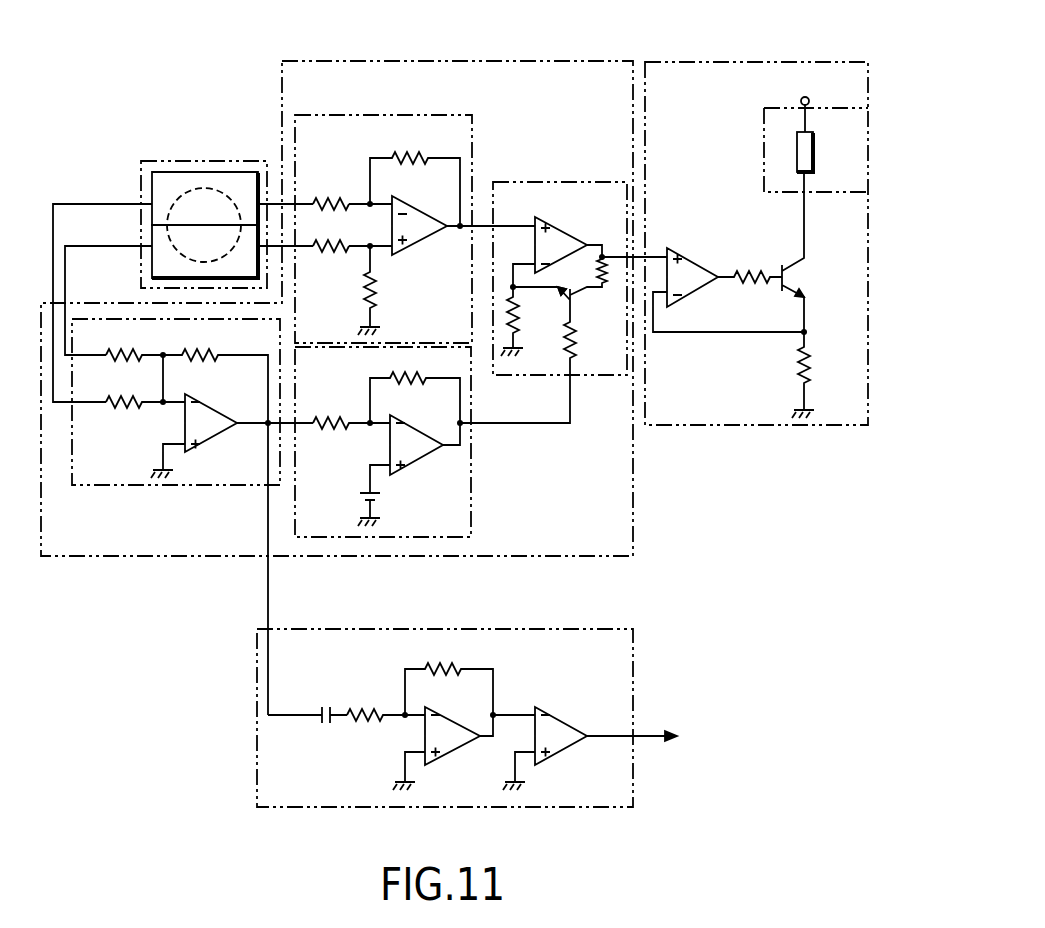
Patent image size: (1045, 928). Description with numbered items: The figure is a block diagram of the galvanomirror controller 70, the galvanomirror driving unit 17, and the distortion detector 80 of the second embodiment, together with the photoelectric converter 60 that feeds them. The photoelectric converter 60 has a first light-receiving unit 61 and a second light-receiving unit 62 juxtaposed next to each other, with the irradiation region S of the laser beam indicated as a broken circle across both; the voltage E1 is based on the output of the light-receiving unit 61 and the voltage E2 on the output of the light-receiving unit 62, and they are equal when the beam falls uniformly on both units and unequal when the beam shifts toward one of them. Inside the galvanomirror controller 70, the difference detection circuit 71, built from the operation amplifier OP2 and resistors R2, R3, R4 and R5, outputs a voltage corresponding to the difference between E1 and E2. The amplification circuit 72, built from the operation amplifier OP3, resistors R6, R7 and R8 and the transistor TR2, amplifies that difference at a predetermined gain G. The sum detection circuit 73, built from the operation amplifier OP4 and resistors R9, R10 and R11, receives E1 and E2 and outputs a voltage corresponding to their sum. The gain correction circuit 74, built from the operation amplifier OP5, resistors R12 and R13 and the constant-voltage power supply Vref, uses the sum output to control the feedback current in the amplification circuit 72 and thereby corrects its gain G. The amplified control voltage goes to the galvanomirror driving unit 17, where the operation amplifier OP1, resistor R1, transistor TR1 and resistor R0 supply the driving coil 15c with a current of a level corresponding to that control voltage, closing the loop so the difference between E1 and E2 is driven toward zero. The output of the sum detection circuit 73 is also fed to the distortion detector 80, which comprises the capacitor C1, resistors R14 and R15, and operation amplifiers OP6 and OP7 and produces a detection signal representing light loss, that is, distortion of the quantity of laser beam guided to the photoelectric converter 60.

The galvanomirror controller 70 is at (516, 61).
The difference detection circuit 71 is at (409, 115).
The amplification circuit 72 is at (549, 182).
The sum detection circuit 73 is at (205, 486).
The gain correction circuit 74 is at (472, 512).
The distortion detector 80 is at (482, 629).
The galvanomirror driving unit 17 is at (767, 62).
The photoelectric converter 60 is at (220, 161).
The first light-receiving unit 61 is at (153, 190).
The second light-receiving unit 62 is at (153, 266).
The sensing region S is at (195, 188).
The voltage E1 is at (66, 204).
The voltage E2 is at (100, 246).
The resistor R2 is at (330, 200).
The resistor R3 is at (330, 242).
The resistor R4 is at (404, 134).
The resistor R5 is at (377, 283).
The operation amplifier OP2 is at (431, 241).
The operation amplifier OP3 is at (561, 232).
The resistor R6 is at (597, 275).
The transistor TR2 is at (597, 312).
The resistor R7 is at (516, 305).
The resistor R8 is at (577, 343).
The operation amplifier OP1 is at (699, 243).
The resistor R1 is at (751, 270).
The transistor TR1 is at (803, 263).
The resistor R0 is at (812, 367).
The driving coil 15c is at (817, 152).
The resistor R9 is at (121, 352).
The resistor R10 is at (121, 398).
The resistor R11 is at (221, 340).
The operation amplifier OP4 is at (206, 438).
The resistor R12 is at (330, 415).
The resistor R13 is at (425, 377).
The operation amplifier OP5 is at (414, 461).
The constant-voltage power supply Vref is at (365, 492).
The capacitor C1 is at (322, 722).
The resistor R14 is at (364, 708).
The resistor R15 is at (463, 655).
The operation amplifier OP6 is at (454, 750).
The operation amplifier OP7 is at (564, 750).